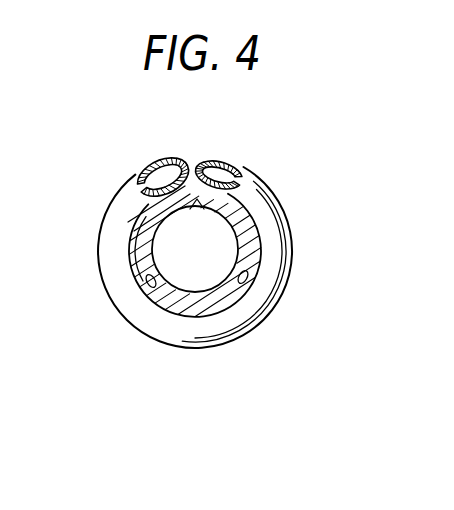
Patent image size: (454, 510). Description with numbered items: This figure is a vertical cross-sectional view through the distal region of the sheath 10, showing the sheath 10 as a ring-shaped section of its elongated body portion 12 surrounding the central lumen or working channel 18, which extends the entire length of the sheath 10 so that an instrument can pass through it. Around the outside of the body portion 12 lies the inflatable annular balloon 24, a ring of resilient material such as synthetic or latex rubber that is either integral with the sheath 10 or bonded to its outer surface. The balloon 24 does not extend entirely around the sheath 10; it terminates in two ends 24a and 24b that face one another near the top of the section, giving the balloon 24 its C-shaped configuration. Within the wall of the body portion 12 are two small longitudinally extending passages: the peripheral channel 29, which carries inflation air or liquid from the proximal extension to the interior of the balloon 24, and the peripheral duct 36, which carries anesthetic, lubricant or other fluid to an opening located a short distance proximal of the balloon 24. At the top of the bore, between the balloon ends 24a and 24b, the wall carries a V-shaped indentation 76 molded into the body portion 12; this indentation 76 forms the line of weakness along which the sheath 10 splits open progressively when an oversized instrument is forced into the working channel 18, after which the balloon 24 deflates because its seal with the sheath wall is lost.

The sheath 10 is at (322, 192).
The elongated body portion 12 is at (249, 207).
The lumen or working channel 18 is at (165, 258).
The inflatable annular balloon 24 is at (288, 257).
The balloon end 24a is at (183, 160).
The balloon end 24b is at (198, 162).
The peripheral channel 29 is at (146, 284).
The peripheral duct 36 is at (248, 278).
The V-shaped indentation 76 is at (198, 210).